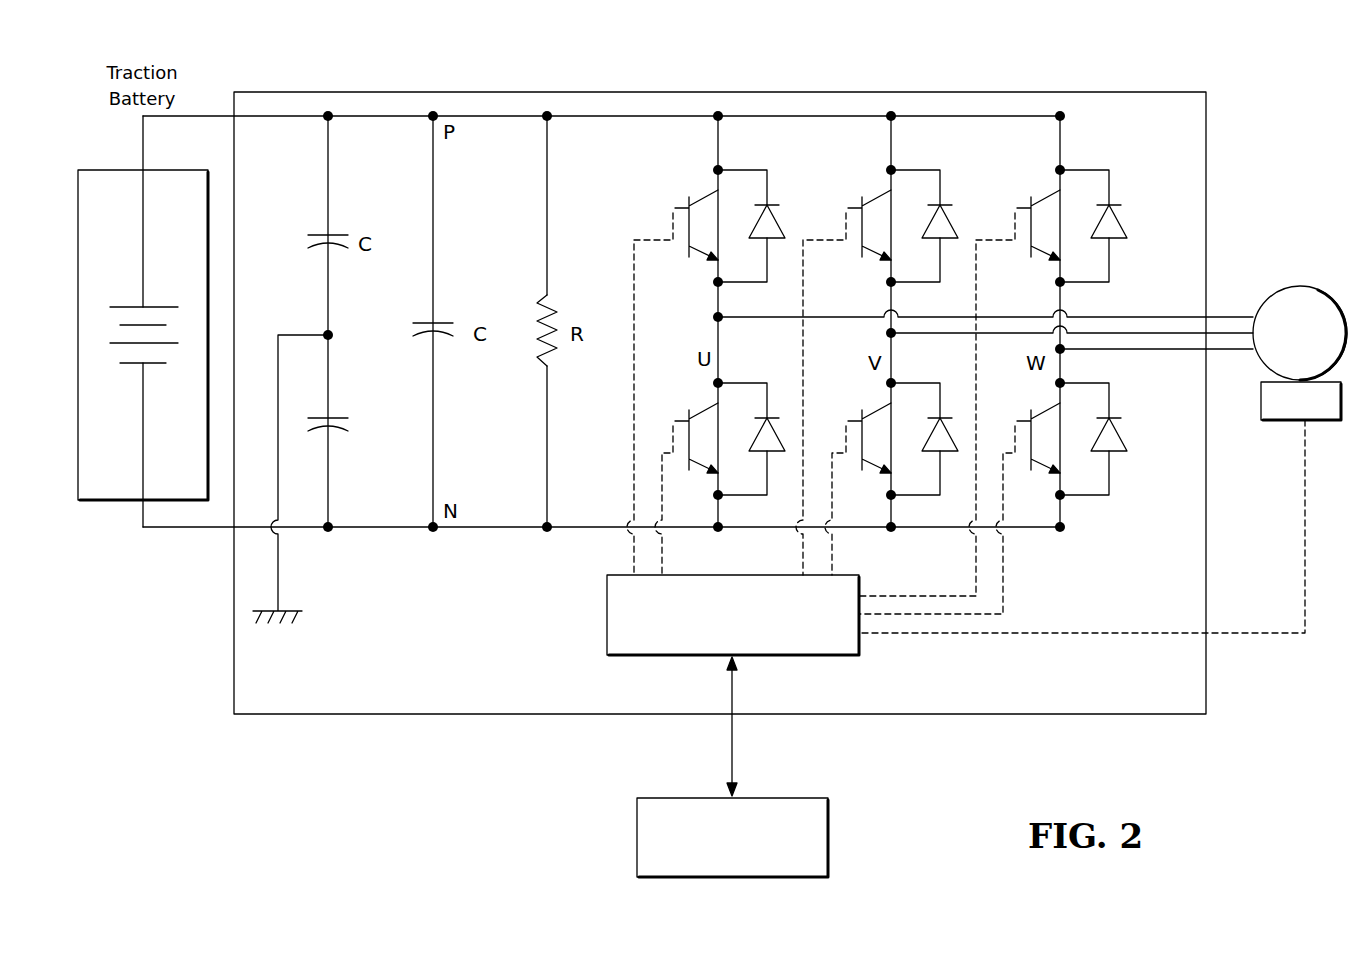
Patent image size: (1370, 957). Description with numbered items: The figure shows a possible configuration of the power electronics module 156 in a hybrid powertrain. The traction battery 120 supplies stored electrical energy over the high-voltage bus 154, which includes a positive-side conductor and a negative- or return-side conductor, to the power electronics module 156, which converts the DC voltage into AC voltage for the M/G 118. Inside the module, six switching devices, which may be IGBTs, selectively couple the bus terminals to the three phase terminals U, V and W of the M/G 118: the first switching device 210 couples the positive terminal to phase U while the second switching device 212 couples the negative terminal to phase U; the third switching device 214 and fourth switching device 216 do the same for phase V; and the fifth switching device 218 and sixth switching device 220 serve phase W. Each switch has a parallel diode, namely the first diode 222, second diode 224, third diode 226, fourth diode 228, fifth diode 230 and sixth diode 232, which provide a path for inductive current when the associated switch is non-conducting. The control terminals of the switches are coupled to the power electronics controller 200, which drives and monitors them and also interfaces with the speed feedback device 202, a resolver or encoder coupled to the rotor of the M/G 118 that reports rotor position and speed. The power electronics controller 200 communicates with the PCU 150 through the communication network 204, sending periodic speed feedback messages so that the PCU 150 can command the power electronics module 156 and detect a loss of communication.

The M/G 118 is at (1298, 286).
The traction battery 120 is at (127, 170).
The PCU 150 is at (830, 836).
The high-voltage bus 154 is at (218, 116).
The power electronics module 156 is at (700, 92).
The power electronics controller 200 is at (607, 614).
The speed feedback device 202 is at (1280, 422).
The communication network 204 is at (736, 770).
The first switching device 210 is at (684, 208).
The second switching device 212 is at (684, 421).
The third switching device 214 is at (857, 208).
The fourth switching device 216 is at (857, 421).
The fifth switching device 218 is at (1026, 208).
The sixth switching device 220 is at (1026, 421).
The first diode 222 is at (773, 205).
The second diode 224 is at (773, 418).
The third diode 226 is at (946, 205).
The fourth diode 228 is at (946, 418).
The fifth diode 230 is at (1115, 205).
The sixth diode 232 is at (1115, 418).